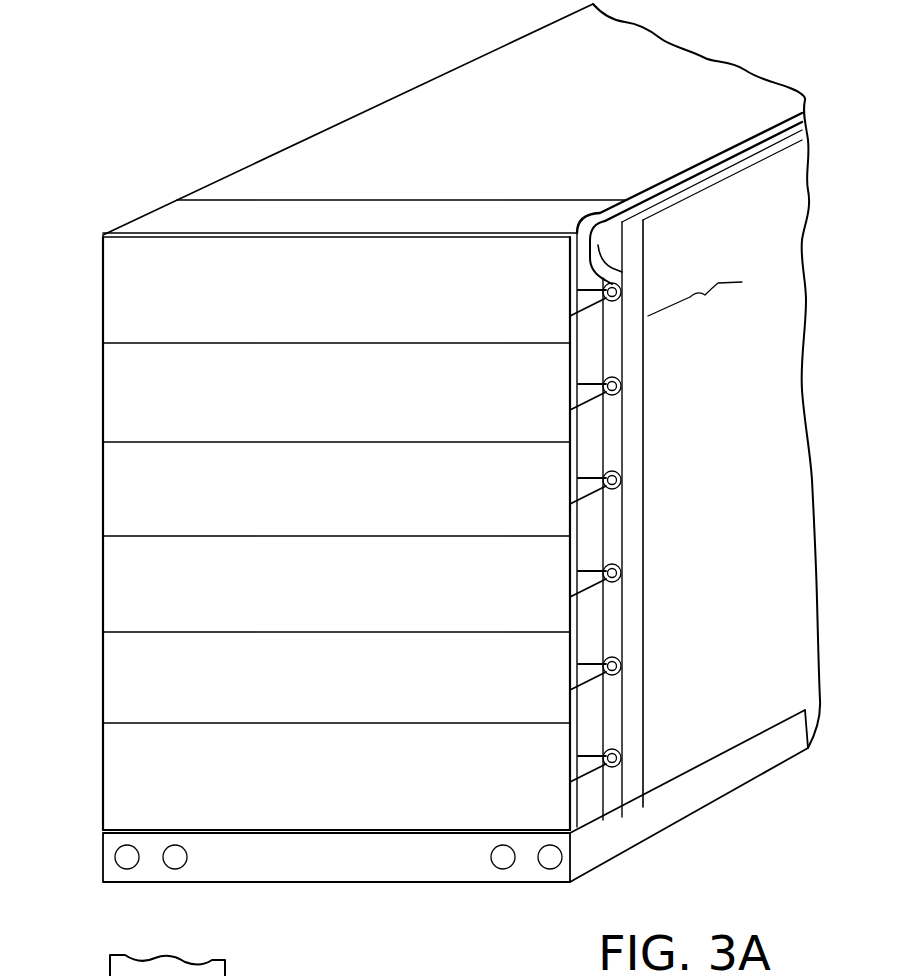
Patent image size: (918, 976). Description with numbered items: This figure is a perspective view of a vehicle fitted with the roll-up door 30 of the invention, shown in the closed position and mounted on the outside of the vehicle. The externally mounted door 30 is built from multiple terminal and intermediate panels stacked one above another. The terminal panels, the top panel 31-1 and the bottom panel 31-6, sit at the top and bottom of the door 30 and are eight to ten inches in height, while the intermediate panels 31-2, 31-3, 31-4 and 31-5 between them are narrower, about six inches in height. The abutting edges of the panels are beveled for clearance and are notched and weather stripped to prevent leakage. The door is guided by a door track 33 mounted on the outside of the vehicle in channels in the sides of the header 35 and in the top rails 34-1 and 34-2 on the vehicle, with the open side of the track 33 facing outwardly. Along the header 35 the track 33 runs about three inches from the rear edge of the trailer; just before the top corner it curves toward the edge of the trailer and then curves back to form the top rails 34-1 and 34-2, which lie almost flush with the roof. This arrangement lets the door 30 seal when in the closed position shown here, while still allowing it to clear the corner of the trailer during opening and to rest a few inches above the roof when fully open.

The roll-up door 30 is at (95, 243).
The top terminal panel 31-1 is at (336, 311).
The intermediate panel 31-2 is at (336, 405).
The intermediate panel 31-3 is at (336, 501).
The intermediate panel 31-4 is at (336, 599).
The intermediate panel 31-5 is at (336, 689).
The bottom terminal panel 31-6 is at (336, 794).
The door track 33 is at (600, 253).
The top rail 34-1 is at (698, 161).
The top rail 34-2 is at (365, 106).
The header 35 is at (475, 214).